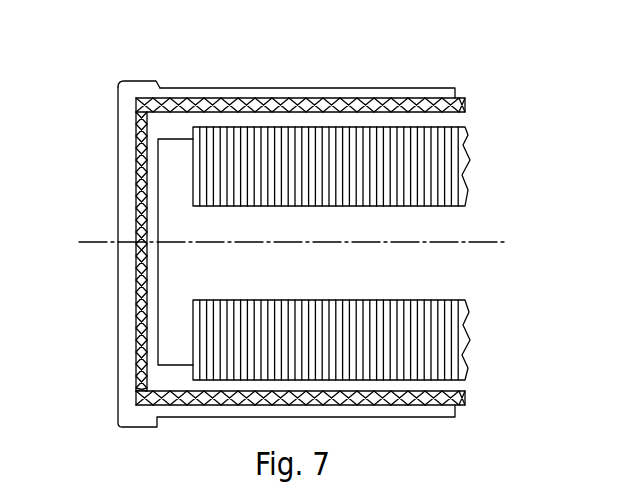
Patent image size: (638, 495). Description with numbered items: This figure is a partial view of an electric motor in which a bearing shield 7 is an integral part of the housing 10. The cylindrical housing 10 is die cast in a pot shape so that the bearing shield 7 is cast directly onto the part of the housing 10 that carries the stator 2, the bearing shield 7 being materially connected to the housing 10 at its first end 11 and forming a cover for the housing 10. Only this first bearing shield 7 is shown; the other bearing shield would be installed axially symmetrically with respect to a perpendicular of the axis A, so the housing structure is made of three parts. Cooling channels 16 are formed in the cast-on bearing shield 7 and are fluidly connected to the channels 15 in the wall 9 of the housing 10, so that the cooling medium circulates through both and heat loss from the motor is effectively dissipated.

The stator 2 is at (462, 160).
The bearing shield 7 is at (121, 137).
The wall 9 is at (268, 94).
The housing 10 is at (222, 78).
The first end 11 is at (139, 75).
The channels 15 is at (466, 399).
The cooling channels 16 is at (137, 289).
The axis A is at (492, 242).